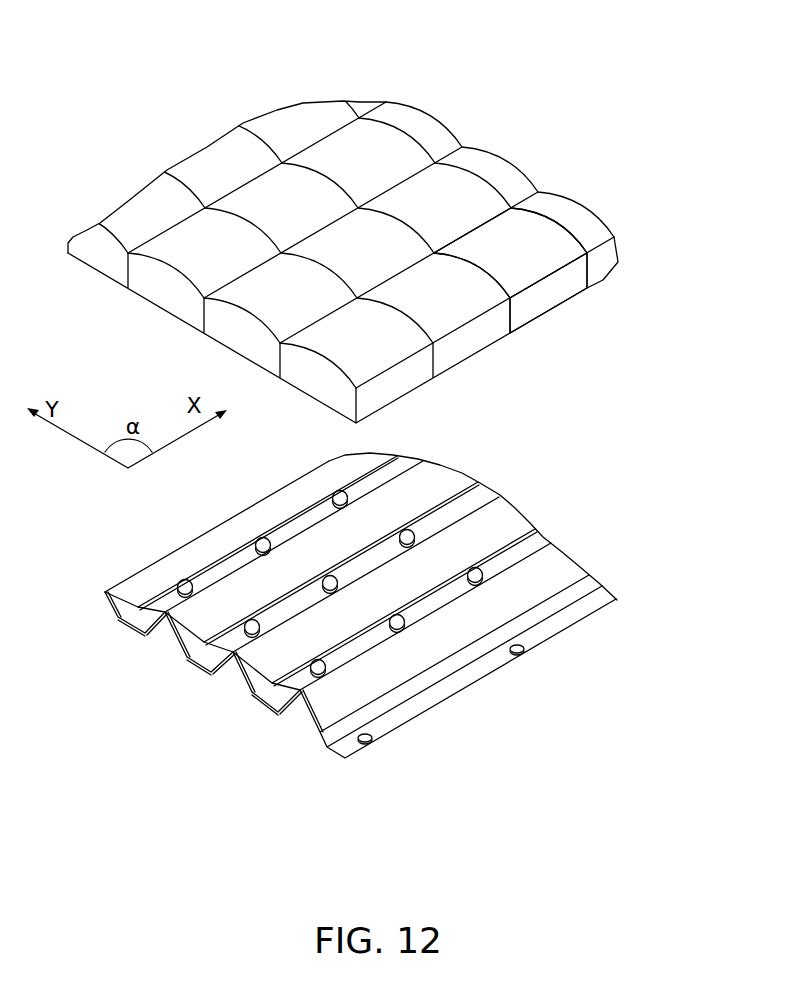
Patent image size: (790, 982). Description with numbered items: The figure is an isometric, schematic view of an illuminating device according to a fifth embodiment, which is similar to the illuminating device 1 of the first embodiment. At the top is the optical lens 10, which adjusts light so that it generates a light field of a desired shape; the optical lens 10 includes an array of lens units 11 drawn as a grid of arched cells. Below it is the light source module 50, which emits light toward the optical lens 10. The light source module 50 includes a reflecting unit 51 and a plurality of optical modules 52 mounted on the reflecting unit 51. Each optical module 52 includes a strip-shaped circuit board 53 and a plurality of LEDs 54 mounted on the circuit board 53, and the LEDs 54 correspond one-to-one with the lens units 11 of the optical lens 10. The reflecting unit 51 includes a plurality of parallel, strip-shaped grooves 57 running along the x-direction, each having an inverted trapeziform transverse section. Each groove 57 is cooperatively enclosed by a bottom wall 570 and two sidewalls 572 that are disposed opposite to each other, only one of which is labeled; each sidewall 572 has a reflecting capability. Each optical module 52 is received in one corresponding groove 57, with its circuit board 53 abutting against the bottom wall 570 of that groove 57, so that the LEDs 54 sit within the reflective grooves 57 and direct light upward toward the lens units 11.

The illuminating device 1 is at (200, 52).
The optical lens 10 is at (526, 166).
The lens units 11 is at (553, 286).
The light source module 50 is at (499, 718).
The reflecting unit 51 is at (614, 591).
The optical module 52 is at (597, 455).
The circuit board 53 is at (544, 537).
The LEDs 54 is at (476, 572).
The grooves 57 is at (246, 777).
The bottom wall 570 is at (275, 691).
The sidewalls 572 is at (253, 670).